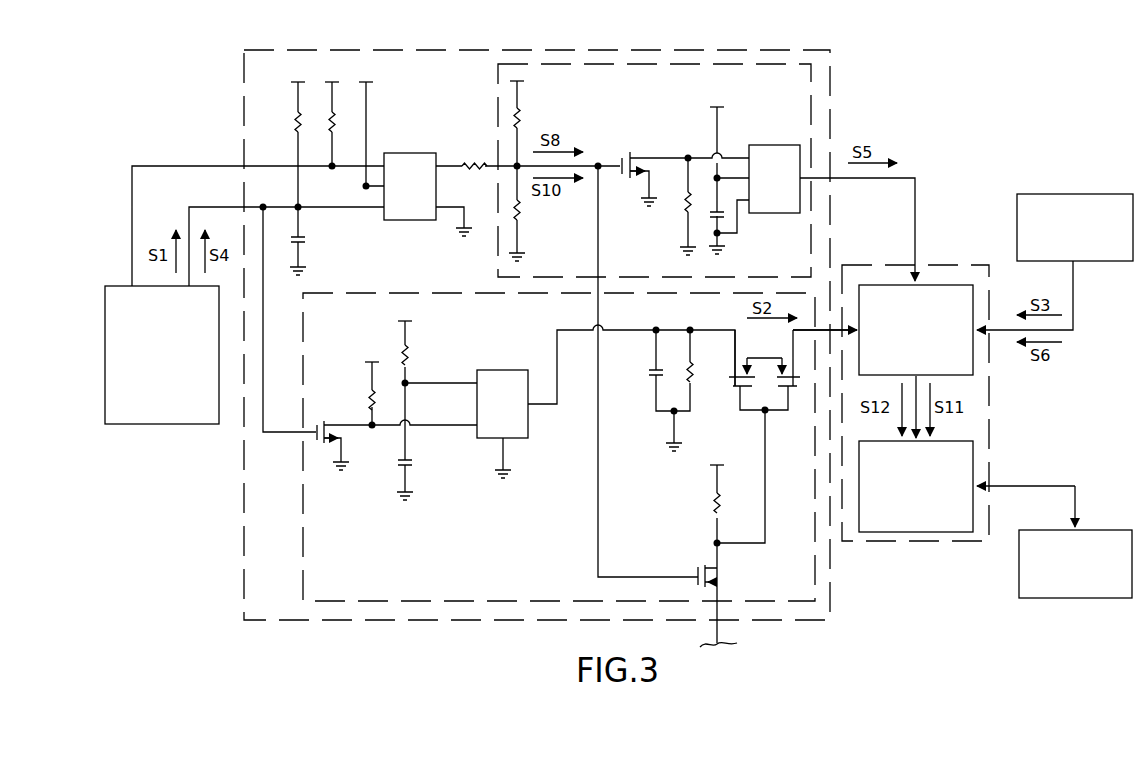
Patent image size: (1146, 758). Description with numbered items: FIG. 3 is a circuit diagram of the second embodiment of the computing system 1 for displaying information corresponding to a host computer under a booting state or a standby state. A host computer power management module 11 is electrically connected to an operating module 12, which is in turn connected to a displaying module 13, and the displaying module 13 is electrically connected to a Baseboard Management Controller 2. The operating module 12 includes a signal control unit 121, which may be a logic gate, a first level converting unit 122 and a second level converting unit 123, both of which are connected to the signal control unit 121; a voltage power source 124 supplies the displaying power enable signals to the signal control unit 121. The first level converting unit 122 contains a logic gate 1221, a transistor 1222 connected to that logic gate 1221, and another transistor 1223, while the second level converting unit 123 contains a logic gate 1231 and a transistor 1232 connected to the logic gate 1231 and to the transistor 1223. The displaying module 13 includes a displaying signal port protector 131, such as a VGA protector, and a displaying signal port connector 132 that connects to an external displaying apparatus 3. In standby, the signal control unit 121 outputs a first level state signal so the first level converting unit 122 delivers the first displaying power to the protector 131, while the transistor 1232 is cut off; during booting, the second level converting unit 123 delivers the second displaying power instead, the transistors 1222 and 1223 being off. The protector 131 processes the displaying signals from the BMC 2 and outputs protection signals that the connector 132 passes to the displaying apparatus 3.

The computing system 1 is at (203, 123).
The Baseboard Management Controller (BMC) 2 is at (1113, 196).
The displaying apparatus 3 is at (1115, 598).
The host computer power management module 11 is at (207, 420).
The operating module 12 is at (244, 513).
The displaying module 13 is at (990, 425).
The signal control unit 121 is at (413, 210).
The first level converting unit 122 is at (303, 541).
The second level converting unit 123 is at (700, 63).
The voltage power source 124 is at (366, 80).
The displaying signal port protector 131 is at (960, 290).
The displaying signal port connector 132 is at (957, 526).
The logic gate 1221 is at (512, 378).
The transistor 1222 is at (337, 422).
The transistor 1223 is at (690, 570).
The logic gate 1231 is at (783, 148).
The transistor 1232 is at (636, 157).